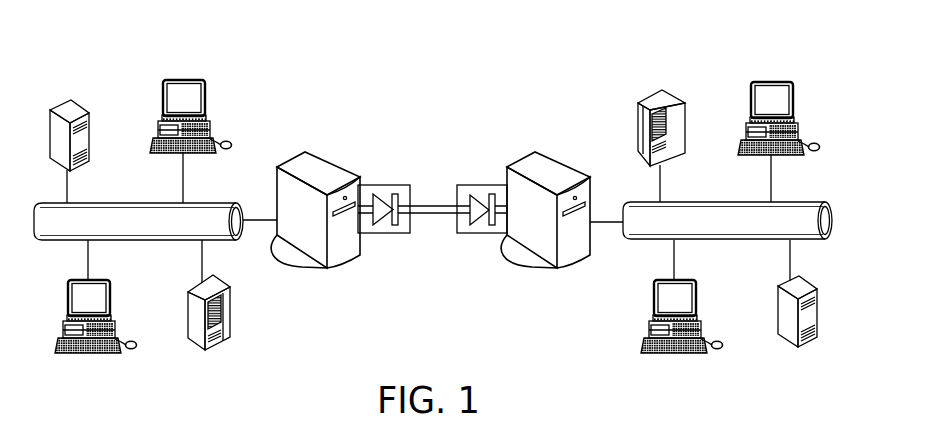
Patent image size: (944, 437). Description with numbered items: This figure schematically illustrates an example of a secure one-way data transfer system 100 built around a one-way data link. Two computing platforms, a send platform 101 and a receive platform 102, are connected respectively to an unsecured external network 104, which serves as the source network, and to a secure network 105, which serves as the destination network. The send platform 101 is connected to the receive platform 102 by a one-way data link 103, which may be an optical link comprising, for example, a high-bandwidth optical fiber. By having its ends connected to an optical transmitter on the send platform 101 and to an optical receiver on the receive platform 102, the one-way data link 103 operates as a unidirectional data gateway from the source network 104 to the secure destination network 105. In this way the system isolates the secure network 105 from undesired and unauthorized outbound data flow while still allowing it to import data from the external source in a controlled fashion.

The one-way data transfer system 100 is at (456, 68).
The send platform 101 is at (318, 166).
The receive platform 102 is at (537, 163).
The one-way data link 103 is at (435, 213).
The unsecured external network 104 is at (127, 217).
The secure network 105 is at (712, 215).